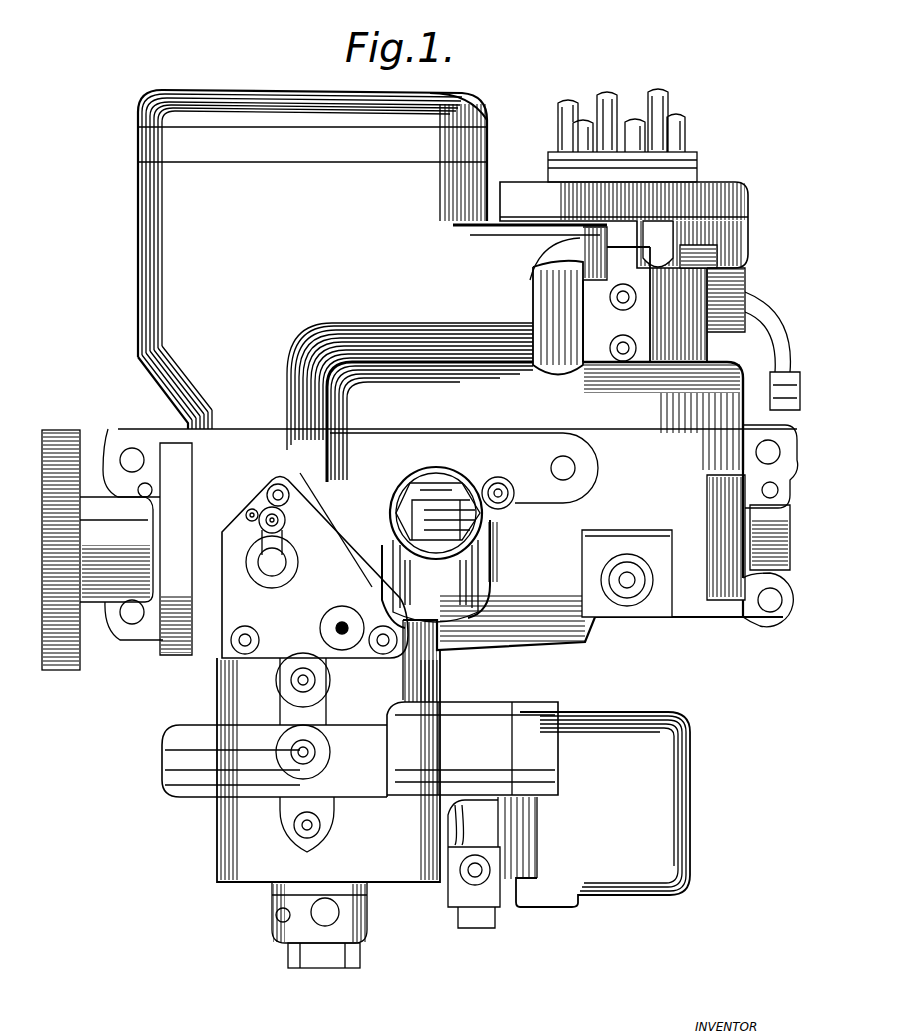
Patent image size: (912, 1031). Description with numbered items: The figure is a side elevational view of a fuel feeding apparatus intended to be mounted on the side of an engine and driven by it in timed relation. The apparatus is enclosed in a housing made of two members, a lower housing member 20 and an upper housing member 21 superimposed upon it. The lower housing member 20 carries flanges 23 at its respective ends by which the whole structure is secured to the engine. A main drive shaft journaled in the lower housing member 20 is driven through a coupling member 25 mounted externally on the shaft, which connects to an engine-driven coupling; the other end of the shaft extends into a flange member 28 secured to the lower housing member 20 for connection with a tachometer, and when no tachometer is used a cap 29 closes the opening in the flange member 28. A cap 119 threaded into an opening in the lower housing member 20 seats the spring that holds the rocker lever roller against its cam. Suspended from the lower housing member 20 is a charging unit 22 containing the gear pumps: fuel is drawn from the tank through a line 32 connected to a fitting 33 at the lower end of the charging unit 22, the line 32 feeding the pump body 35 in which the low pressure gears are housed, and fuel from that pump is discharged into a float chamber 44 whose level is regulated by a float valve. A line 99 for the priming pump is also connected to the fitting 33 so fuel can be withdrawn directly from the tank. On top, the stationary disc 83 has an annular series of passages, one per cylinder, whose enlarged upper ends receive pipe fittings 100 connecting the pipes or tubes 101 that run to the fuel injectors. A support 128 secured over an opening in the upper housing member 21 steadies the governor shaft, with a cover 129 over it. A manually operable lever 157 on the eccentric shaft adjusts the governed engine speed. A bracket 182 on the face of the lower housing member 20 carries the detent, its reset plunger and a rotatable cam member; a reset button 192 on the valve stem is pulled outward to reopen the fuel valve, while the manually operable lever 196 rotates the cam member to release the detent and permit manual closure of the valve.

The upper housing member 21 is at (137, 213).
The support 128 is at (140, 145).
The cover 129 is at (450, 104).
The pipes or tubes 101 is at (608, 100).
The pipe fitting 100 is at (548, 175).
The stationary disc 83 is at (735, 193).
The manually operable lever 157 is at (790, 326).
The flanges 23 is at (120, 438).
The coupling member 25 is at (64, 655).
The manually operable lever 196 is at (252, 528).
The reset button 192 is at (340, 627).
The bracket 182 is at (238, 600).
The cap 119 is at (505, 507).
The cap 29 is at (778, 546).
The lower housing member 20 is at (682, 597).
The flange member 28 is at (742, 597).
The pump body 35 is at (200, 790).
The charging unit 22 is at (208, 864).
The line 99 is at (278, 920).
The fitting 33 is at (369, 932).
The line 32 is at (327, 920).
The float chamber 44 is at (630, 870).